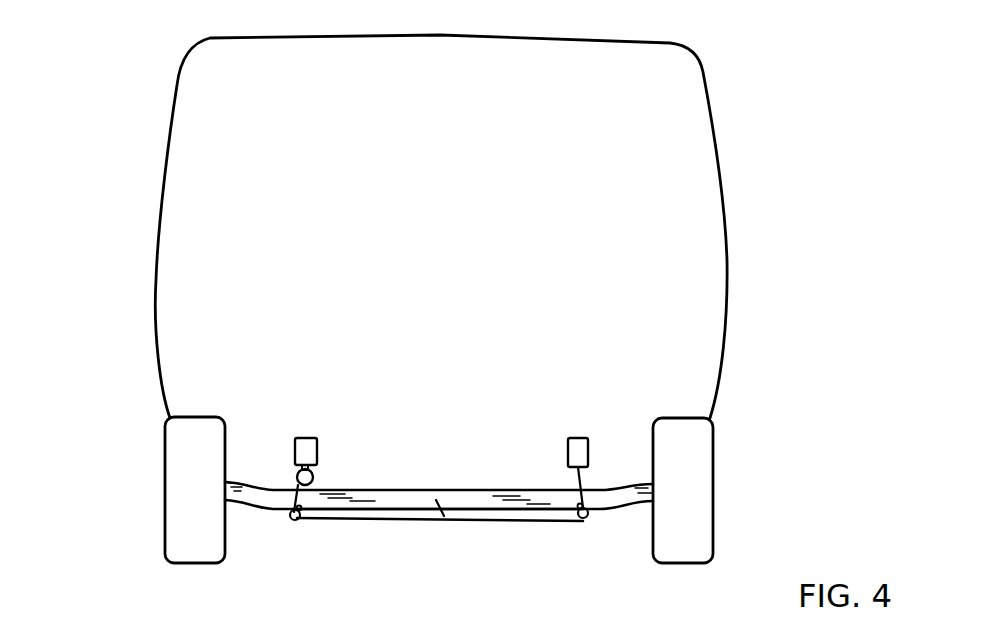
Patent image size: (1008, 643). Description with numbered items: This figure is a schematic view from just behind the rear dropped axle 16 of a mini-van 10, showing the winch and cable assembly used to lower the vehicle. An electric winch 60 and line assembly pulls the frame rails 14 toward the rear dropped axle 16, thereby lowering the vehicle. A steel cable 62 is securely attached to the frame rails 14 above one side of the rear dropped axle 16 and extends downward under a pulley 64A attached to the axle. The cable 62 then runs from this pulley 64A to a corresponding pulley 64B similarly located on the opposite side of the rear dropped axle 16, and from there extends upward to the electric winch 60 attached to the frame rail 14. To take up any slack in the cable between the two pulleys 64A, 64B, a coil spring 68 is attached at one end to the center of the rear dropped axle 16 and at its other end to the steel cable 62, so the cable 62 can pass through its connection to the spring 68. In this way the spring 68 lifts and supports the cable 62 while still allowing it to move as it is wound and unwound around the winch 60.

The mini-van 10 is at (108, 90).
The frame rails 14 is at (306, 437).
The rear dropped axle 16 is at (418, 500).
The electric winch 60 is at (313, 473).
The steel cable 62 is at (475, 520).
The pulley 64A is at (582, 522).
The pulley 64B is at (300, 522).
The coil spring 68 is at (438, 510).